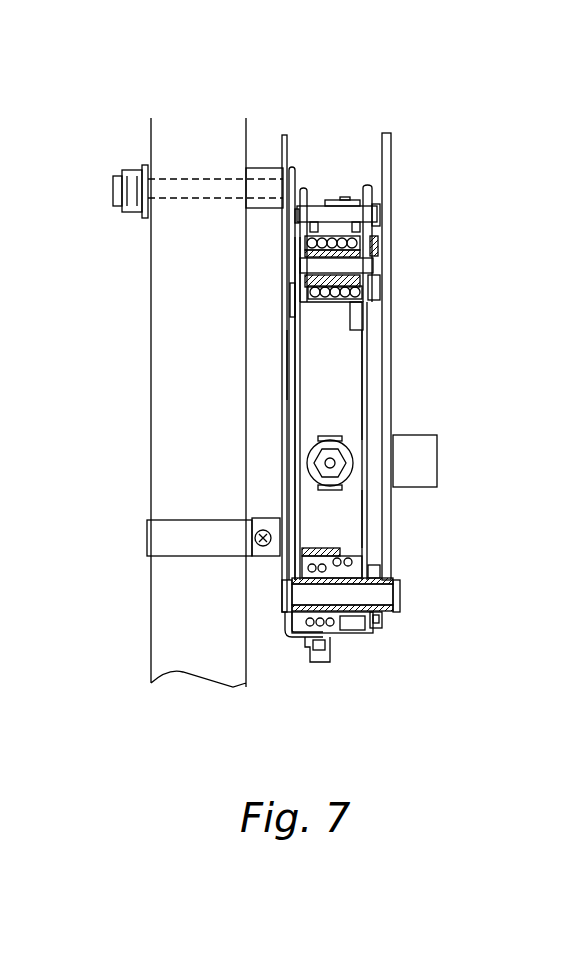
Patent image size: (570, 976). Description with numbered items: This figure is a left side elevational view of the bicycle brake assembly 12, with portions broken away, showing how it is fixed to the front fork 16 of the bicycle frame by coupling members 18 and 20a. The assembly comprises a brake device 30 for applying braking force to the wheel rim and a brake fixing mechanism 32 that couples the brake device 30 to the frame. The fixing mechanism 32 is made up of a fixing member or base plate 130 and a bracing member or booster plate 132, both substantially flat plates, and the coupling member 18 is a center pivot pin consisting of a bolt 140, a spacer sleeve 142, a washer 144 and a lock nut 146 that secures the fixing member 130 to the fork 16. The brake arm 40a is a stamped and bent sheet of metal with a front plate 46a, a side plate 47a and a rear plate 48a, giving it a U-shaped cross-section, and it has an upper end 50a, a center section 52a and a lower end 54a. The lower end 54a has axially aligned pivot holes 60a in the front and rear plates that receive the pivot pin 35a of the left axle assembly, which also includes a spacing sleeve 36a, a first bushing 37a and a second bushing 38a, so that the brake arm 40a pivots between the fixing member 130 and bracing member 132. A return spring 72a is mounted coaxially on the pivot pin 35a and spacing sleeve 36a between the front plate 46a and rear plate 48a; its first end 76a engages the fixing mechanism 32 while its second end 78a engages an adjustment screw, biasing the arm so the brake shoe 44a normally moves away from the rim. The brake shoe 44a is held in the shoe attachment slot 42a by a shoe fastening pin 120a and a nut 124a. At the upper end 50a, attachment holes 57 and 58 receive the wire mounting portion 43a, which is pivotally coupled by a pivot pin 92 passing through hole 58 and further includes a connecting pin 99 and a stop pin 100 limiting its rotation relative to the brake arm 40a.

The bicycle brake assembly 12 is at (473, 152).
The front fork 16 is at (152, 306).
The coupling member 18 is at (298, 165).
The coupling member 20a is at (147, 528).
The brake device 30 is at (368, 367).
The brake fixing mechanism 32 is at (412, 92).
The pivot pin 35a is at (393, 589).
The spacing sleeve 36a is at (382, 608).
The first bushing 37a is at (378, 628).
The second bushing 38a is at (290, 622).
The brake arm 40a is at (367, 380).
The shoe attachment portion or slot 42a is at (342, 488).
The wire mounting portion 43a is at (374, 194).
The brake shoe 44a is at (437, 477).
The front wall or plate 46a is at (365, 410).
The side wall or plate 47a is at (331, 349).
The rear wall or plate 48a is at (288, 362).
The upper end 50a is at (348, 338).
The center section 52a is at (350, 427).
The lower end 54a is at (352, 533).
The attachment hole 57 is at (308, 306).
The attachment hole 58 is at (380, 262).
The pivot holes 60a is at (282, 603).
The torsion or return spring 72a is at (312, 556).
The first end 76a is at (305, 643).
The second end 78a is at (357, 562).
The pivot pin 92 is at (360, 273).
The connecting pin 99 is at (380, 217).
The stop pin 100 is at (365, 302).
The shoe fastening pin 120a is at (325, 458).
The nut 124a is at (315, 470).
The fixing member or base plate 130 is at (283, 138).
The bracing member or booster plate 132 is at (390, 150).
The bolt 140 is at (292, 168).
The spacer sleeve 142 is at (265, 210).
The washer 144 is at (147, 218).
The lock nut 146 is at (128, 172).